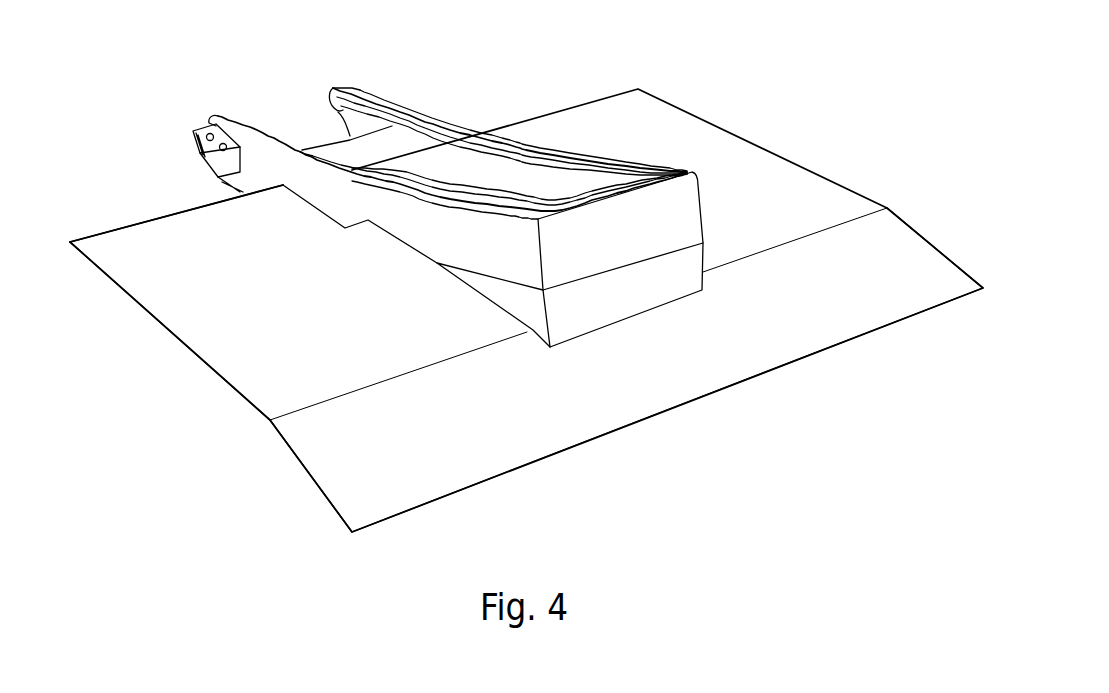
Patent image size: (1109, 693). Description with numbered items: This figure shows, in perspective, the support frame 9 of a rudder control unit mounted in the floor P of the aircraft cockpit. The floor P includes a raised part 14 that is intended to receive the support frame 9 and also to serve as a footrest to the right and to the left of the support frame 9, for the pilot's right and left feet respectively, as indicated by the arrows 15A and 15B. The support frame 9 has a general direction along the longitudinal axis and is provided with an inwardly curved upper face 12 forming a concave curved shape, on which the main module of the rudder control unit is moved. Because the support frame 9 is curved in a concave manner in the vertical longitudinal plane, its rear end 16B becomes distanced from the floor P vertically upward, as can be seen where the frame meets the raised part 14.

The support frame 9 is at (440, 112).
The inwardly curved upper face 12 is at (492, 172).
The raised part 14 is at (810, 168).
The arrow 15A is at (730, 225).
The arrow 15B is at (420, 340).
The rear end 16B is at (625, 238).
The floor P is at (147, 221).